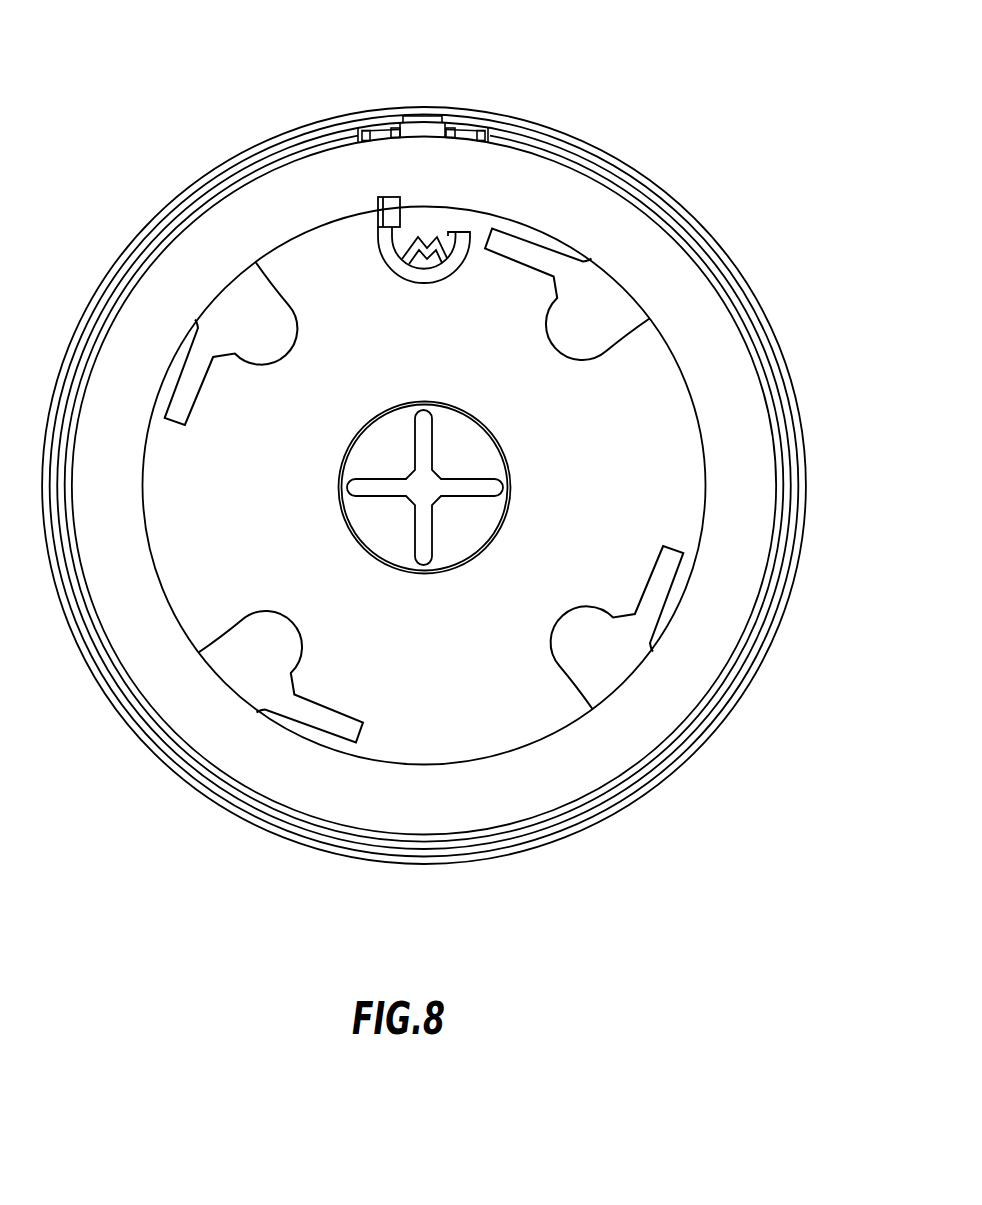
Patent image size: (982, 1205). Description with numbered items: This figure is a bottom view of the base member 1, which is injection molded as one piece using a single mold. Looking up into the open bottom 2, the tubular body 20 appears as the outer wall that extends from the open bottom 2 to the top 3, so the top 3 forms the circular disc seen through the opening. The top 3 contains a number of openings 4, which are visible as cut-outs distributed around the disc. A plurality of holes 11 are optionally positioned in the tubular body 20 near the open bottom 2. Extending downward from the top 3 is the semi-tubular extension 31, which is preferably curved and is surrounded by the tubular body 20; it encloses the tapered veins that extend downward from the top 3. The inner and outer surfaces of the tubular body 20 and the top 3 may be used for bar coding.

The base member 1 is at (152, 815).
The open bottom 2 is at (633, 807).
The top 3 is at (618, 452).
The openings 4 is at (593, 310).
The holes 11 is at (373, 137).
The tubular body 20 is at (230, 237).
The semi-tubular extension 31 is at (456, 232).